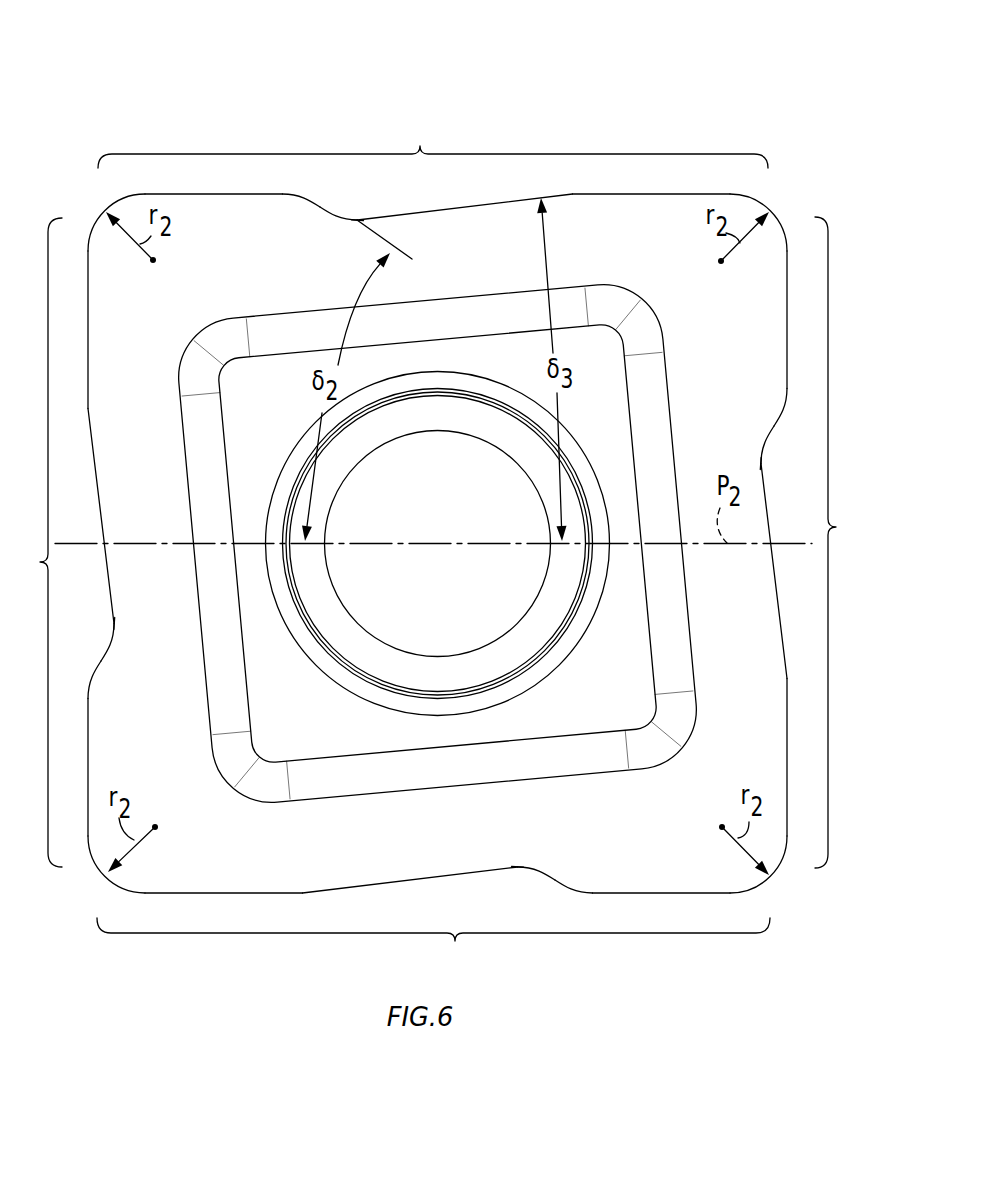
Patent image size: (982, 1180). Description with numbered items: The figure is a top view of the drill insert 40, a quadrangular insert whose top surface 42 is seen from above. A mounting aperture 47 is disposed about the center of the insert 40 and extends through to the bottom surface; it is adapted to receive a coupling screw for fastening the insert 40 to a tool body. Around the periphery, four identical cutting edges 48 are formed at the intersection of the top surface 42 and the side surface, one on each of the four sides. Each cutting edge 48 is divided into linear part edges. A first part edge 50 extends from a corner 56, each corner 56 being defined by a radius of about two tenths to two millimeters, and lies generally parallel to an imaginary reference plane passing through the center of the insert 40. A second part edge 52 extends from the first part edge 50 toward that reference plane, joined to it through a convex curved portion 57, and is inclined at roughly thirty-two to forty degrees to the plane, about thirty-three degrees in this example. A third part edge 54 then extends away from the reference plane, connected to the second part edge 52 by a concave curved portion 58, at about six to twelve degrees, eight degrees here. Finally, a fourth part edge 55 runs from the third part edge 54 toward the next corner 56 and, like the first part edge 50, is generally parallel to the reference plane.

The insert 40 is at (186, 88).
The top surface 42 is at (106, 250).
The mounting aperture 47 is at (506, 632).
The cutting edge 48 is at (438, 546).
The first part edge 50 is at (210, 194).
The second part edge 52 is at (340, 212).
The third part edge 54 is at (473, 207).
The fourth part edge 55 is at (648, 193).
The corner 56 is at (115, 202).
The convex curved portion 57 is at (312, 197).
The concave curved portion 58 is at (360, 218).